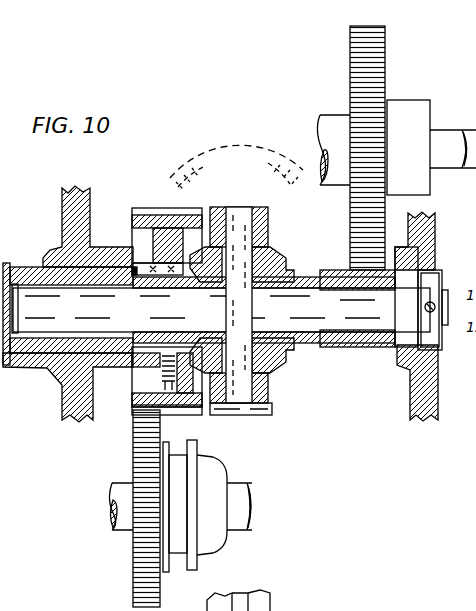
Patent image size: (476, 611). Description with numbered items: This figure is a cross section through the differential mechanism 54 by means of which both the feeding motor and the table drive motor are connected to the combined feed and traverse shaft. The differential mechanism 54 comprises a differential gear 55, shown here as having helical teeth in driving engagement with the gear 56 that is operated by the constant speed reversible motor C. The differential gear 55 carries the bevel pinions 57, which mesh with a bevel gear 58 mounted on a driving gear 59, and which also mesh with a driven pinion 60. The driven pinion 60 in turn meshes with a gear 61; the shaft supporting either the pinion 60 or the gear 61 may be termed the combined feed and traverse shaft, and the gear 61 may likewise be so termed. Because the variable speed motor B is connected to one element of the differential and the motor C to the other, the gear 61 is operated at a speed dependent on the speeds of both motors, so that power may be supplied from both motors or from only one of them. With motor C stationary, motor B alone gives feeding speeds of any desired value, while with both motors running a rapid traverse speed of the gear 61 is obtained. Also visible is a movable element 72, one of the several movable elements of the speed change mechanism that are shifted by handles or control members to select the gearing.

The differential mechanism 54 is at (272, 392).
The differential gear 55 is at (243, 417).
The gear 56 is at (229, 152).
The bevel pinions 57 is at (272, 249).
The bevel gear 58 is at (190, 410).
The driving gear 59 is at (154, 212).
The driven pinion 60 is at (330, 347).
The gear 61 is at (386, 78).
The movable element 72 is at (134, 459).